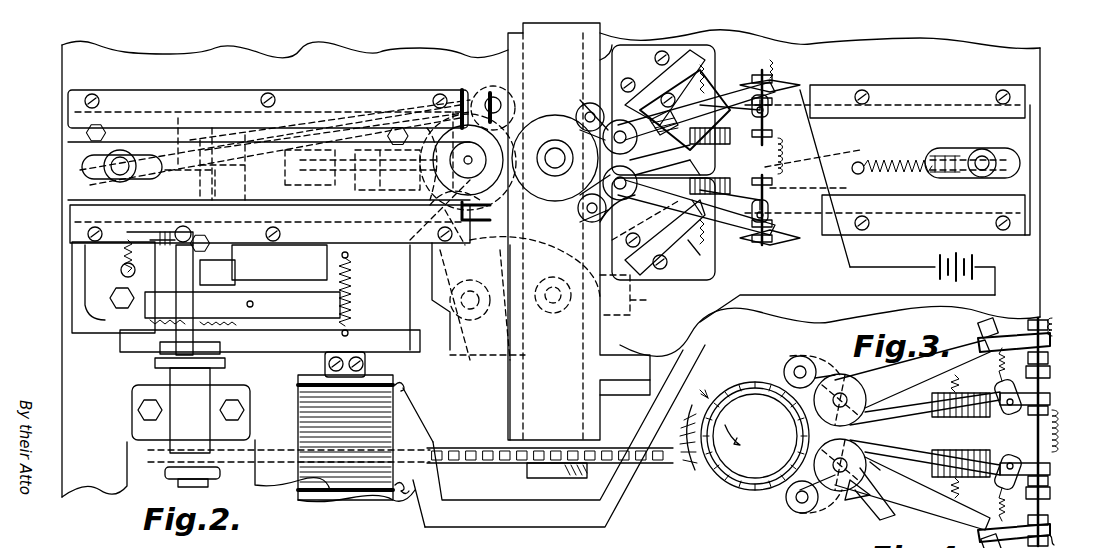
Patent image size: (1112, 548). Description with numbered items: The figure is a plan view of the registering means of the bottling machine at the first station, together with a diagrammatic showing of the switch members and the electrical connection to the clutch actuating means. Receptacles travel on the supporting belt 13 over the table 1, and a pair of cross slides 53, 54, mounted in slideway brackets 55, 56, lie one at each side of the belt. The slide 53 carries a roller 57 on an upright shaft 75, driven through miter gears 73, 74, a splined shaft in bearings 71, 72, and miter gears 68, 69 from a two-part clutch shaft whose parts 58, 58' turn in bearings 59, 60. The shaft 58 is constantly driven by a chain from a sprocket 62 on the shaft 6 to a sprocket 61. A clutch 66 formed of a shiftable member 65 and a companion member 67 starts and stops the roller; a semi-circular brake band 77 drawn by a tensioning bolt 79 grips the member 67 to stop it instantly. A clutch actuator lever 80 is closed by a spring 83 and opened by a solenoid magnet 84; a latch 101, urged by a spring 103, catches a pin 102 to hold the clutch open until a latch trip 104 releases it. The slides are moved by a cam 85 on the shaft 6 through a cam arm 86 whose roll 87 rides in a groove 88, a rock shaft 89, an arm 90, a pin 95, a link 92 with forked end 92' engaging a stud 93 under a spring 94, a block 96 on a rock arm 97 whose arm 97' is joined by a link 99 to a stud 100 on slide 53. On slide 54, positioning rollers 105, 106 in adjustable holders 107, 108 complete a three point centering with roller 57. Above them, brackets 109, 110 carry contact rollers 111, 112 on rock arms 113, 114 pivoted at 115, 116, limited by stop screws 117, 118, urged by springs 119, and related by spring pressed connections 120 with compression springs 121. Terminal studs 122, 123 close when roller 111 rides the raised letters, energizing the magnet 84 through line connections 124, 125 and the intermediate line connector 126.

In FIG. 2, the table 1 is at (551, 266).
In FIG. 2, the shaft 6 is at (555, 477).
In FIG. 2, the supporting belt 13 is at (603, 368).
In FIG. 2, the cross slide 53 is at (320, 133).
In FIG. 2, the cross slide 54 is at (895, 120).
In FIG. 2, the slideway bracket 55 is at (98, 250).
In FIG. 2, the slideway bracket 56 is at (975, 85).
In FIG. 2, the roller 57 is at (530, 128).
In FIG. 3, the roller 57 is at (695, 470).
In FIG. 2, the clutch shaft 58 is at (194, 484).
In FIG. 2, the clutch shaft 58' is at (165, 117).
In FIG. 2, the bearing 59 is at (180, 416).
In FIG. 2, the bearing 60 is at (263, 265).
In FIG. 2, the sprocket 61 is at (165, 470).
In FIG. 2, the sprocket 62 is at (590, 465).
In FIG. 2, the clutch member 65 is at (162, 362).
In FIG. 2, the clutch 66 is at (227, 325).
In FIG. 2, the clutch member 67 is at (242, 306).
In FIG. 2, the miter gear 68 is at (162, 185).
In FIG. 2, the miter gear 69 is at (212, 128).
In FIG. 2, the bearing 71 is at (269, 167).
In FIG. 2, the bearing 72 is at (370, 180).
In FIG. 2, the miter gear 73 is at (427, 128).
In FIG. 2, the miter gear 74 is at (453, 112).
In FIG. 2, the upright shaft 75 is at (480, 170).
In FIG. 2, the semi-circular band 77 is at (180, 302).
In FIG. 2, the tensioning bolt 79 is at (258, 304).
In FIG. 2, the clutch actuator lever 80 is at (270, 353).
In FIG. 2, the spring 83 is at (348, 285).
In FIG. 2, the solenoid magnet 84 is at (340, 478).
In FIG. 2, the cam 85 is at (628, 380).
In FIG. 2, the cam arm 86 is at (478, 322).
In FIG. 2, the roll 87 is at (558, 315).
In FIG. 2, the groove 88 is at (625, 300).
In FIG. 2, the rock shaft 89 is at (515, 255).
In FIG. 2, the arm 90 is at (465, 215).
In FIG. 2, the link 92 is at (961, 148).
In FIG. 2, the forked end 92' is at (992, 148).
In FIG. 2, the stud 93 is at (982, 178).
In FIG. 2, the spring 94 is at (910, 175).
In FIG. 2, the pin 95 is at (420, 220).
In FIG. 2, the block 96 is at (410, 240).
In FIG. 2, the rock arm 97 is at (489, 221).
In FIG. 2, the arm 97' is at (492, 92).
In FIG. 2, the link 99 is at (367, 118).
In FIG. 2, the stud 100 is at (105, 170).
In FIG. 2, the latch 101 is at (111, 307).
In FIG. 2, the pin 102 is at (160, 348).
In FIG. 2, the spring 103 is at (122, 262).
In FIG. 2, the latch trip 104 is at (78, 236).
In FIG. 2, the positioning roller 105 is at (600, 222).
In FIG. 3, the positioning roller 105 is at (815, 512).
In FIG. 2, the positioning roller 106 is at (595, 100).
In FIG. 3, the positioning roller 106 is at (790, 358).
In FIG. 2, the adjustable holder 107 is at (690, 265).
In FIG. 2, the adjustable holder 108 is at (650, 62).
In FIG. 2, the adjustable bracket 109 is at (705, 250).
In FIG. 2, the adjustable bracket 110 is at (650, 95).
In FIG. 2, the contact roller 111 is at (579, 161).
In FIG. 3, the contact roller 111 is at (785, 370).
In FIG. 3, the contact roller 112 is at (830, 510).
In FIG. 2, the rock arm 113 is at (772, 72).
In FIG. 3, the rock arm 113 is at (866, 455).
In FIG. 2, the rock arm 114 is at (760, 138).
In FIG. 3, the rock arm 114 is at (988, 417).
In FIG. 2, the pivot 115 is at (660, 160).
In FIG. 3, the pivot 115 is at (886, 491).
In FIG. 2, the pivot 116 is at (622, 140).
In FIG. 3, the pivot 116 is at (868, 415).
In FIG. 2, the stop screw 117 is at (615, 235).
In FIG. 2, the stop screw 118 is at (590, 75).
In FIG. 2, the spring 119 is at (720, 90).
In FIG. 3, the spring 119 is at (945, 380).
In FIG. 2, the spring pressed connection 120 is at (810, 84).
In FIG. 3, the spring pressed connection 120 is at (985, 345).
In FIG. 2, the compression spring 121 is at (775, 100).
In FIG. 3, the compression spring 121 is at (984, 446).
In FIG. 3, the terminal stud 122 is at (1054, 432).
In FIG. 3, the terminal stud 123 is at (1040, 433).
In FIG. 2, the line connection 124 is at (810, 145).
In FIG. 3, the line connection 124 is at (1052, 318).
In FIG. 2, the line connection 125 is at (728, 305).
In FIG. 3, the line connection 125 is at (1052, 534).
In FIG. 2, the intermediate line connector 126 is at (782, 200).
In FIG. 3, the intermediate line connector 126 is at (1033, 431).